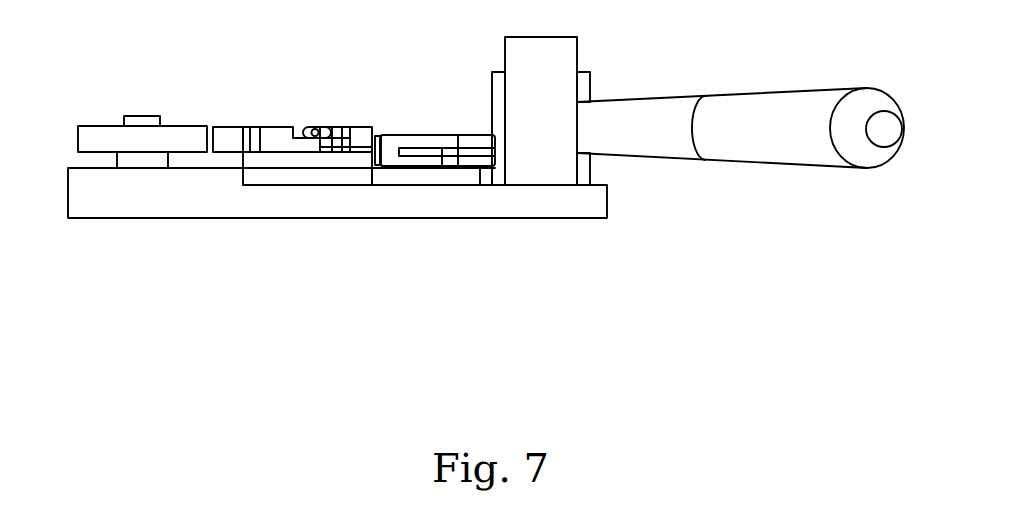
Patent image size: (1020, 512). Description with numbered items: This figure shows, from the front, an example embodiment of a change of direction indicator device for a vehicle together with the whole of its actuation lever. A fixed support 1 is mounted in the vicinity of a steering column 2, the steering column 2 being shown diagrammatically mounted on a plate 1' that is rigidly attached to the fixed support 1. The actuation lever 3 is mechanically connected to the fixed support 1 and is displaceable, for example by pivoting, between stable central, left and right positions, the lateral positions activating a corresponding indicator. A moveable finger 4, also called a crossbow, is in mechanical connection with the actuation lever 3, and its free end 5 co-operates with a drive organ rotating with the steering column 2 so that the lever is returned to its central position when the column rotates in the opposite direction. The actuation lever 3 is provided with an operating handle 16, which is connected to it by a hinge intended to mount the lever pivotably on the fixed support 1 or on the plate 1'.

The fixed support 1 is at (307, 223).
The plate 1' is at (337, 236).
The steering column 2 is at (90, 124).
The actuation lever 3 is at (418, 129).
The moveable finger 4 is at (275, 120).
The free end 5 is at (217, 125).
The operating handle 16 is at (792, 147).